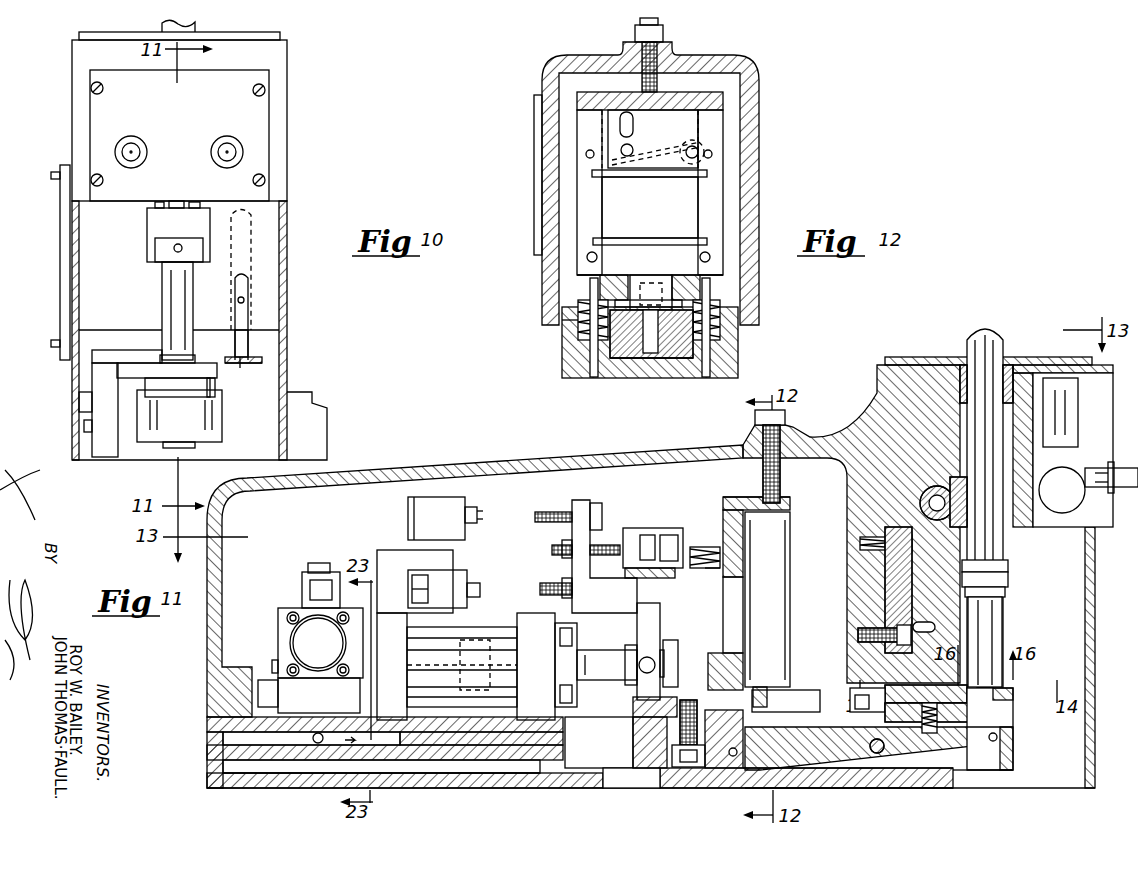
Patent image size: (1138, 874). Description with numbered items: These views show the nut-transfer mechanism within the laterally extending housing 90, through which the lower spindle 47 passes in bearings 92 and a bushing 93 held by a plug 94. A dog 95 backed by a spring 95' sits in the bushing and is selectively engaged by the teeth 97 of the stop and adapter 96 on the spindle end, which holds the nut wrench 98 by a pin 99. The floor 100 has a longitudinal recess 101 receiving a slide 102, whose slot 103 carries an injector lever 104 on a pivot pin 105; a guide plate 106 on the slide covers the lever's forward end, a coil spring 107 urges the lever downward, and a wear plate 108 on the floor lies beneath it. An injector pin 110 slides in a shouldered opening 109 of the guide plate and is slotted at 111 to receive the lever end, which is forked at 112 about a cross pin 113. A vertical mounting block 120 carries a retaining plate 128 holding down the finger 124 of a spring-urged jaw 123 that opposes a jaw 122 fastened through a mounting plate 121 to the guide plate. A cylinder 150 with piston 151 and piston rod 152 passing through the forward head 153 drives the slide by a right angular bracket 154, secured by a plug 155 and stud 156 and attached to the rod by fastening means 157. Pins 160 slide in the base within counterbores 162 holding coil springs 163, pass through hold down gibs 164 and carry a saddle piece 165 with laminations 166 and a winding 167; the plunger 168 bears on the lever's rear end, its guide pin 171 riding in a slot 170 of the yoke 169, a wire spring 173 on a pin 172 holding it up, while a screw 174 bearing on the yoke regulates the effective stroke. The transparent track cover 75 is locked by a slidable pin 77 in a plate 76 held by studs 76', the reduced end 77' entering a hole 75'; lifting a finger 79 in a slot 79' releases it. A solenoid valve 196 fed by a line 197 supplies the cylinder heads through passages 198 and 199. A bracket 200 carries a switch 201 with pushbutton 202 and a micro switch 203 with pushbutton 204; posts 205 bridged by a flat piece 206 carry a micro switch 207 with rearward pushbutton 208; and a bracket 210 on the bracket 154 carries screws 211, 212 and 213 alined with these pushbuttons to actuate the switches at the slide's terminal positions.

In FIG. 11, the lower spindle 47 is at (1005, 335).
In FIG. 10, the transparent cover 75 is at (276, 341).
In FIG. 11, the transparent cover 75 is at (895, 680).
In FIG. 10, the hole 75' is at (279, 353).
In FIG. 11, the plate 76 is at (914, 590).
In FIG. 11, the studs 76' is at (904, 559).
In FIG. 10, the slidable pin 77 is at (279, 325).
In FIG. 11, the slidable pin 77 is at (899, 638).
In FIG. 10, the reduced end 77' is at (289, 365).
In FIG. 10, the finger 79 is at (278, 305).
In FIG. 11, the finger 79 is at (931, 616).
In FIG. 10, the slot 79' is at (289, 270).
In FIG. 10, the housing 90 is at (127, 468).
In FIG. 12, the housing 90 is at (745, 73).
In FIG. 11, the housing 90 is at (862, 410).
In FIG. 11, the bearings 92 is at (1010, 378).
In FIG. 11, the bushing 93 is at (942, 520).
In FIG. 11, the plug 94 is at (950, 522).
In FIG. 10, the dog 95 is at (172, 192).
In FIG. 11, the dog 95 is at (1075, 505).
In FIG. 11, the spring 95' is at (1052, 445).
In FIG. 10, the stop and adapter 96 is at (147, 230).
In FIG. 11, the stop and adapter 96 is at (1010, 580).
In FIG. 10, the teeth 97 is at (159, 202).
In FIG. 11, the teeth 97 is at (1010, 562).
In FIG. 10, the wrench 98 is at (162, 278).
In FIG. 11, the wrench 98 is at (1003, 627).
In FIG. 11, the pin 99 is at (1005, 593).
In FIG. 12, the floor 100 is at (738, 358).
In FIG. 11, the floor 100 is at (565, 778).
In FIG. 11, the longitudinal recess 101 is at (585, 768).
In FIG. 10, the slide 102 is at (170, 430).
In FIG. 12, the slide 102 is at (615, 365).
In FIG. 11, the slide 102 is at (656, 770).
In FIG. 12, the longitudinal slot 103 is at (660, 355).
In FIG. 11, the longitudinal slot 103 is at (750, 770).
In FIG. 12, the injector lever 104 is at (655, 345).
In FIG. 11, the injector lever 104 is at (790, 757).
In FIG. 11, the pivot pin 105 is at (860, 755).
In FIG. 10, the guide plate 106 is at (207, 390).
In FIG. 11, the guide plate 106 is at (905, 712).
In FIG. 11, the coil spring 107 is at (930, 703).
In FIG. 10, the wear plate 108 is at (190, 448).
In FIG. 11, the wear plate 108 is at (930, 765).
In FIG. 11, the shouldered opening 109 is at (1013, 710).
In FIG. 11, the injector pin 110 is at (995, 687).
In FIG. 11, the slot 111 is at (990, 775).
In FIG. 11, the fork 112 is at (1013, 745).
In FIG. 11, the cross pin 113 is at (1000, 735).
In FIG. 10, the vertical mounting block 120 is at (88, 392).
In FIG. 10, the mounting plate 121 is at (215, 381).
In FIG. 11, the jaw 122 is at (867, 700).
In FIG. 10, the complementary jaw 123 is at (195, 368).
In FIG. 10, the finger 124 is at (115, 395).
In FIG. 10, the retaining plate 128 is at (100, 350).
In FIG. 11, the cylinder 150 is at (440, 645).
In FIG. 11, the piston 151 is at (480, 640).
In FIG. 11, the piston rod 152 is at (605, 655).
In FIG. 11, the forward head 153 is at (382, 660).
In FIG. 11, the right angular bracket 154 is at (650, 713).
In FIG. 11, the plug 155 is at (672, 767).
In FIG. 11, the stud 156 is at (690, 767).
In FIG. 11, the fastening means 157 is at (672, 642).
In FIG. 12, the pins 160 is at (594, 378).
In FIG. 12, the counterbore 162 is at (722, 335).
In FIG. 12, the coil springs 163 is at (738, 317).
In FIG. 12, the hold down gibs 164 is at (740, 302).
In FIG. 12, the saddle piece 165 is at (606, 275).
In FIG. 11, the saddle piece 165 is at (712, 660).
In FIG. 12, the vertical laminations 166 is at (580, 222).
In FIG. 11, the vertical laminations 166 is at (750, 612).
In FIG. 12, the winding 167 is at (645, 213).
In FIG. 11, the winding 167 is at (723, 594).
In FIG. 12, the plunger 168 is at (630, 168).
In FIG. 11, the plunger 168 is at (785, 704).
In FIG. 12, the yoke 169 is at (605, 95).
In FIG. 11, the yoke 169 is at (728, 497).
In FIG. 12, the vertical slot 170 is at (633, 124).
In FIG. 12, the guide pin 171 is at (632, 147).
In FIG. 11, the laterally extending pin 172 is at (704, 547).
In FIG. 12, the wire spring 173 is at (706, 148).
In FIG. 11, the wire spring 173 is at (710, 568).
In FIG. 12, the screw 174 is at (652, 58).
In FIG. 11, the screw 174 is at (780, 478).
In FIG. 11, the solenoid valve 196 is at (278, 640).
In FIG. 11, the line 197 is at (330, 564).
In FIG. 11, the passage 198 is at (455, 765).
In FIG. 11, the passage 199 is at (378, 740).
In FIG. 11, the bracket 200 is at (390, 553).
In FIG. 11, the switch 201 is at (440, 505).
In FIG. 11, the pushbutton 202 is at (478, 514).
In FIG. 11, the micro switch 203 is at (455, 580).
In FIG. 11, the pushbutton 204 is at (480, 590).
In FIG. 11, the posts 205 is at (660, 617).
In FIG. 11, the flat piece 206 is at (625, 574).
In FIG. 11, the micro switch 207 is at (645, 530).
In FIG. 11, the pushbutton 208 is at (636, 532).
In FIG. 11, the right angular bracket 210 is at (604, 603).
In FIG. 11, the screw 211 is at (540, 512).
In FIG. 11, the screw 212 is at (555, 583).
In FIG. 11, the screw 213 is at (552, 550).